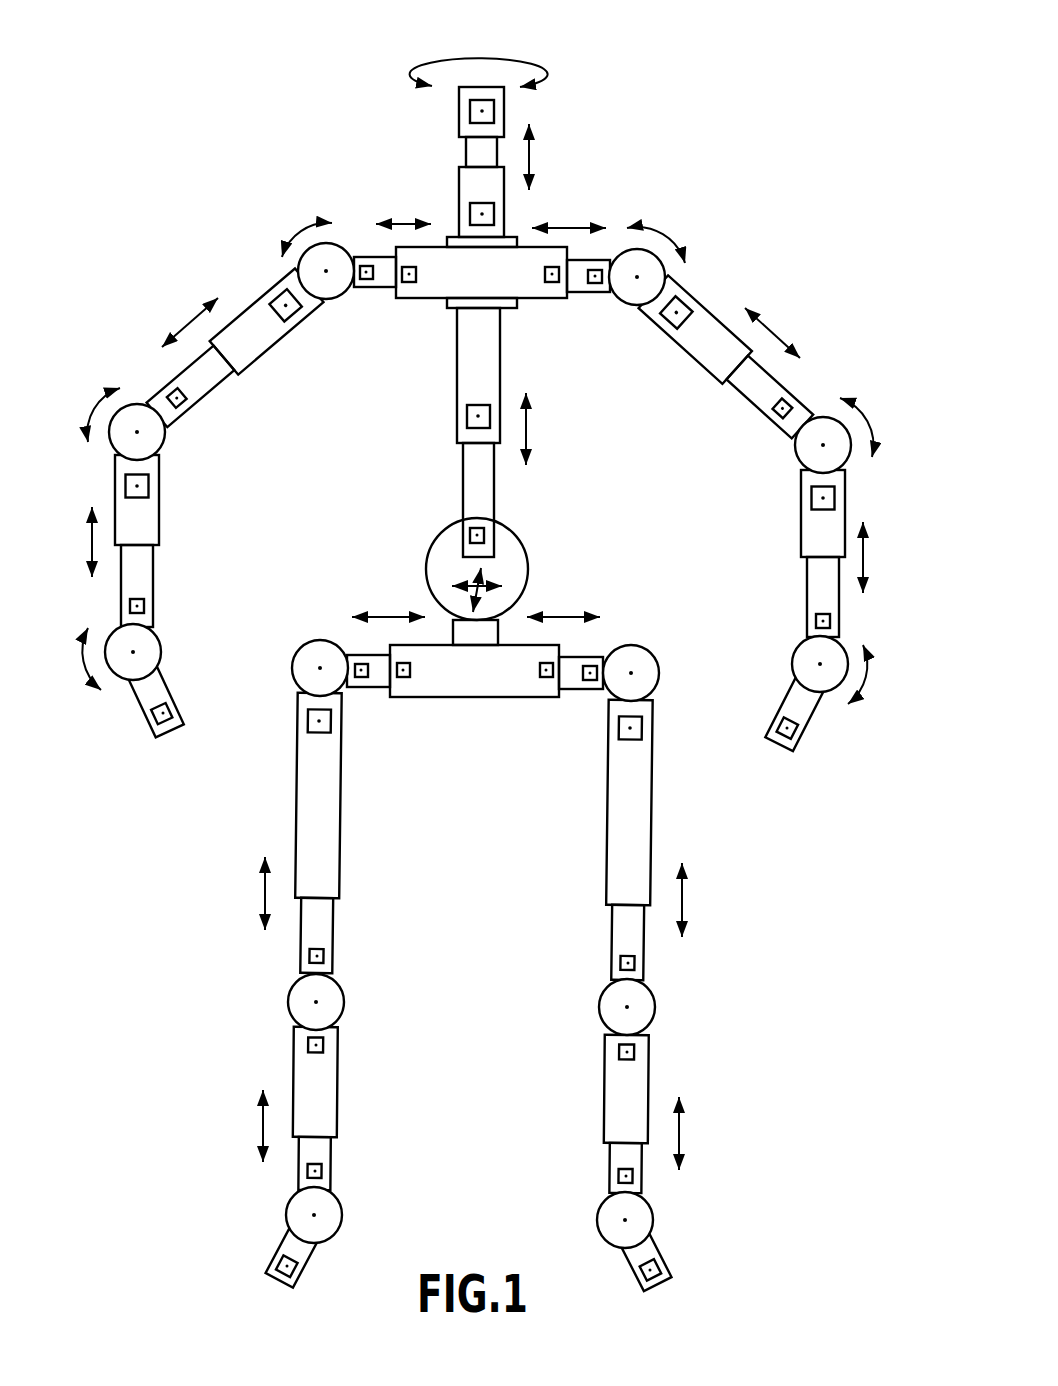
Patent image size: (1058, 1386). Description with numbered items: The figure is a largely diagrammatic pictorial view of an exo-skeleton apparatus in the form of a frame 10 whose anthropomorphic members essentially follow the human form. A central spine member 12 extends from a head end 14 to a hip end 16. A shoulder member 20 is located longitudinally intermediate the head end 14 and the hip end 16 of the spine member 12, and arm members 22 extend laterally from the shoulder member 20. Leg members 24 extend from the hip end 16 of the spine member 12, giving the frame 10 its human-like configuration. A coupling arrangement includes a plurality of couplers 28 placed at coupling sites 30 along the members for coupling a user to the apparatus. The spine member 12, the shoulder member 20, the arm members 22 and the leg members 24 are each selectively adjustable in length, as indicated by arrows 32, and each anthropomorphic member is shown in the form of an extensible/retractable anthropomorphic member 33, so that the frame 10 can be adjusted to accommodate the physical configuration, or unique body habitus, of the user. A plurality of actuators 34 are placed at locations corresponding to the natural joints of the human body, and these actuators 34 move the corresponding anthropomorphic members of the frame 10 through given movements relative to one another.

The frame 10 is at (620, 226).
The central spine member 12 is at (500, 353).
The head end 14 is at (548, 82).
The hip end 16 is at (480, 698).
The shoulder member 20 is at (441, 291).
The arm members 22 is at (167, 378).
The leg members 24 is at (297, 805).
The couplers 28 is at (293, 315).
The coupling sites 30 is at (283, 303).
The arrows 32 is at (531, 154).
The extensible/retractable anthropomorphic members 33 is at (459, 183).
The actuators 34 is at (333, 250).